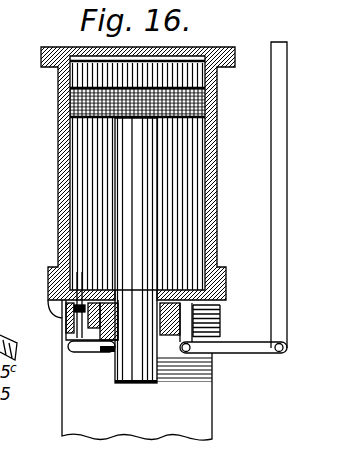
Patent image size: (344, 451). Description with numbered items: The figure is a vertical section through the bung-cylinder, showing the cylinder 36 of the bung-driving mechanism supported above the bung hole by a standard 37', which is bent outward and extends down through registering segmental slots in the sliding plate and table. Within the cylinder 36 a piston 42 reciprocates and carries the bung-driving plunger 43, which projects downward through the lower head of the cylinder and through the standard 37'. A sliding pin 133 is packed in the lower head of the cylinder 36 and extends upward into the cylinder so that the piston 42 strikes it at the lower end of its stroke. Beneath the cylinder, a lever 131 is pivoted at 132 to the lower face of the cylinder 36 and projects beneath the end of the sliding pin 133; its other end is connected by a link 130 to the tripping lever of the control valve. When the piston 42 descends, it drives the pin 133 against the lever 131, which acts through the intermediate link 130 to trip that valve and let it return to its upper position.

The cylinder 36 is at (60, 150).
The piston 42 is at (76, 96).
The bung-driving plunger 43 is at (159, 198).
The link 130 is at (288, 262).
The lever 131 is at (259, 349).
The pivot 132 is at (187, 351).
The sliding pin 133 is at (76, 285).
The standard 37' is at (130, 370).